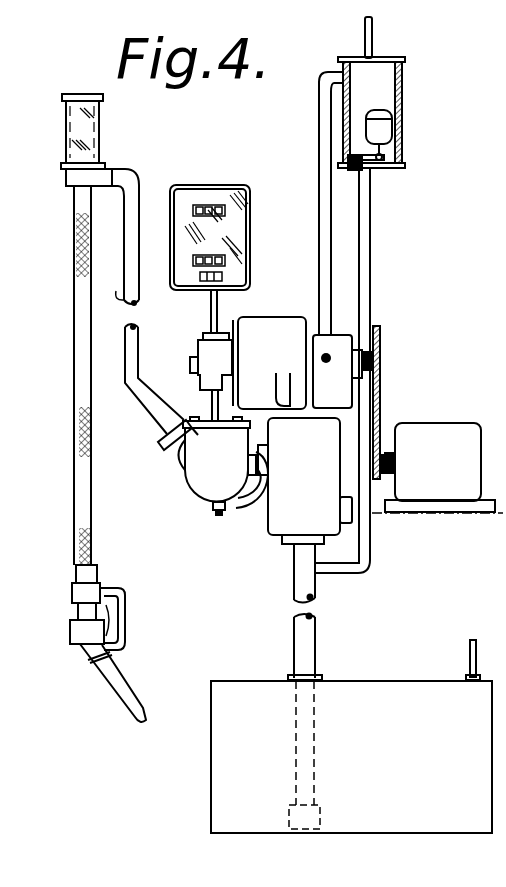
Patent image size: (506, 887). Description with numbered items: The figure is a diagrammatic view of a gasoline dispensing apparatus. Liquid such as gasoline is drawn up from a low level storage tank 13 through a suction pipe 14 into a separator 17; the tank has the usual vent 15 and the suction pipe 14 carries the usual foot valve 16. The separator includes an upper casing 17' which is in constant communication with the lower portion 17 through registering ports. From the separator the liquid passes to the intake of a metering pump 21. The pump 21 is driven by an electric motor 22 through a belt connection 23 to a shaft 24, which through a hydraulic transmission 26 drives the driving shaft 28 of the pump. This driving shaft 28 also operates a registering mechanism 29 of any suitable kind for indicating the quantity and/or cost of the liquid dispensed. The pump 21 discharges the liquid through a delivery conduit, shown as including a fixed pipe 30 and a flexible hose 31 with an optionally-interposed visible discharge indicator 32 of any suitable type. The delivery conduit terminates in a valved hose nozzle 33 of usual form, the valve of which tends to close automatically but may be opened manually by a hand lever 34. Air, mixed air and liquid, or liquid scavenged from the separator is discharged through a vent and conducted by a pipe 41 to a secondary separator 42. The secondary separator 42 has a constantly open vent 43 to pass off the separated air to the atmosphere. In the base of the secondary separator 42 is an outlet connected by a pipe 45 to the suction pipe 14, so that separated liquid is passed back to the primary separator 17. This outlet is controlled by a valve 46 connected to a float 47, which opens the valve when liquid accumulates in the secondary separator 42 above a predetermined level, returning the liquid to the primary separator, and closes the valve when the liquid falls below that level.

The storage tank 13 is at (351, 757).
The suction pipe 14 is at (318, 590).
The vent 15 is at (470, 668).
The foot valve 16 is at (320, 820).
The separator 17 is at (305, 481).
The upper casing 17' is at (269, 363).
The metering pump 21 is at (223, 466).
The electric motor 22 is at (437, 468).
The belt connection 23 is at (378, 413).
The shaft 24 is at (372, 360).
The hydraulic transmission 26 is at (210, 318).
The driving shaft 28 is at (212, 400).
The registering mechanism 29 is at (243, 233).
The fixed pipe 30 is at (128, 345).
The flexible hose 31 is at (80, 368).
The visible discharge indicator 32 is at (92, 135).
The valved hose nozzle 33 is at (96, 654).
The hand lever 34 is at (122, 613).
The pipe 41 is at (325, 268).
The secondary separator 42 is at (401, 108).
The vent 43 is at (372, 48).
The pipe 45 is at (361, 267).
The valve 46 is at (365, 167).
The float 47 is at (382, 130).